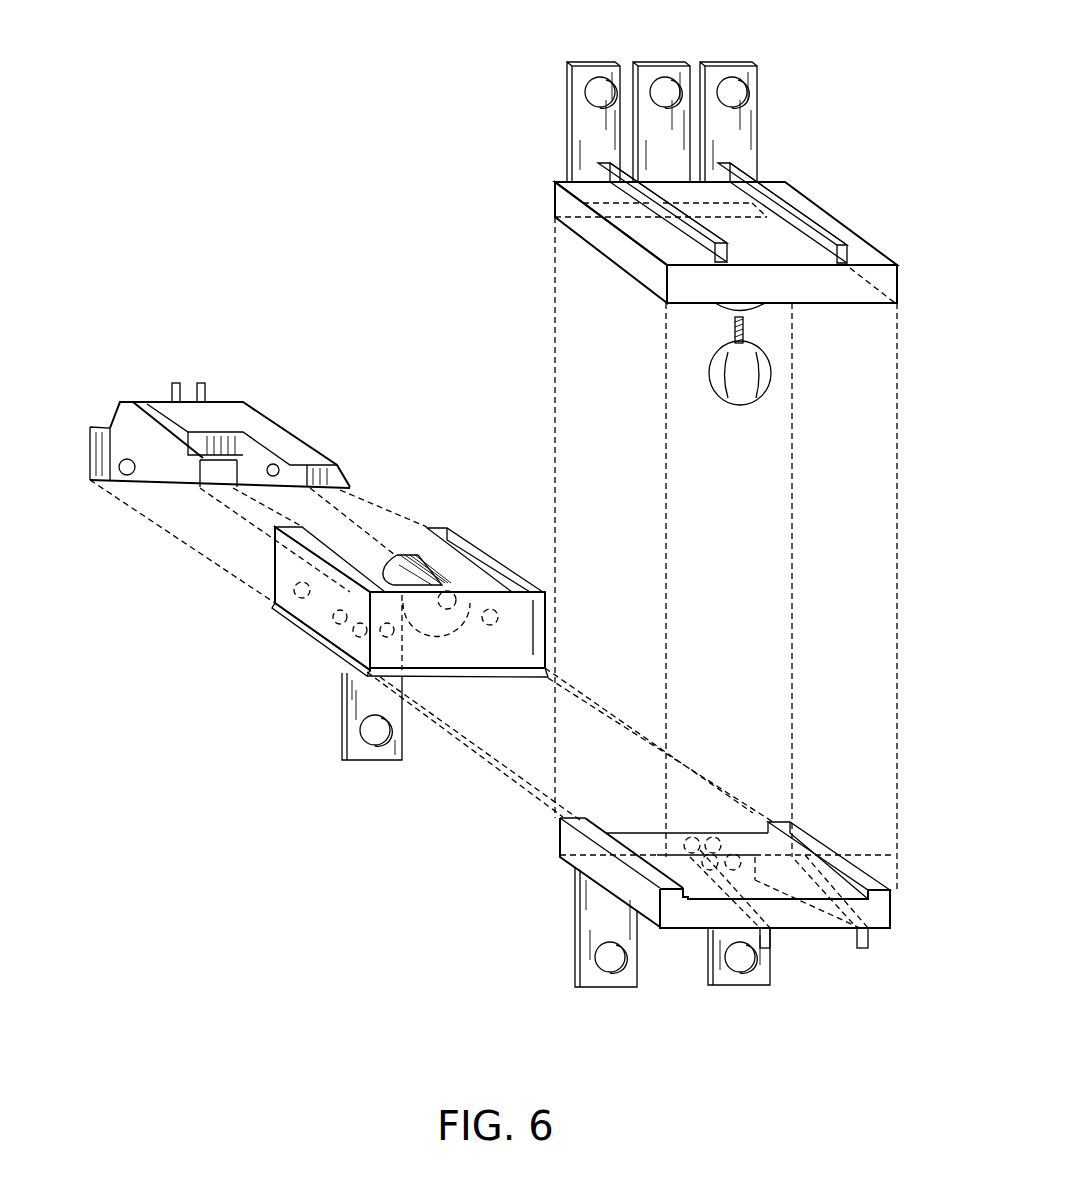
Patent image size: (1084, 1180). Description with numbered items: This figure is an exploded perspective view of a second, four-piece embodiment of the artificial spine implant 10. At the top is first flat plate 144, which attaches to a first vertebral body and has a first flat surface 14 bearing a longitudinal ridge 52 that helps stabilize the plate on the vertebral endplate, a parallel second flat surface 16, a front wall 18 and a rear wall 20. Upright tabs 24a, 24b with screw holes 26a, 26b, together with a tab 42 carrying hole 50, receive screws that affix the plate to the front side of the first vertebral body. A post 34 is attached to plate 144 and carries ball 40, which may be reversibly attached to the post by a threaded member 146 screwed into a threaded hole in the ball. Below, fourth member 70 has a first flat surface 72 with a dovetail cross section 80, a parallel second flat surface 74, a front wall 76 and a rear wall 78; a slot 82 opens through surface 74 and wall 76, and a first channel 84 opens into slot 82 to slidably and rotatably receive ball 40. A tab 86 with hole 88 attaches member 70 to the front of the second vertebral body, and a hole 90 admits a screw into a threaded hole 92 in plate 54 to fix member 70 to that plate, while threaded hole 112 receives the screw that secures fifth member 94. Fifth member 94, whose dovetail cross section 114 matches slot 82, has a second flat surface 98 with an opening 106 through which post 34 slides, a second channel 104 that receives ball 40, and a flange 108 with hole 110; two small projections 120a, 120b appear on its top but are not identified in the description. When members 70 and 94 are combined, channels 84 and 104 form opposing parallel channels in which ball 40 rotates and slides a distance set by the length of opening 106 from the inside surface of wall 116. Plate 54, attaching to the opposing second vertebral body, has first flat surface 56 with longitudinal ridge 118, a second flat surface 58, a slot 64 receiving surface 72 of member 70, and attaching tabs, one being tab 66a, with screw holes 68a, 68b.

The artificial spine implant 10 is at (452, 358).
The first flat surface 14 is at (643, 235).
The second flat surface 16 is at (658, 297).
The front wall 18 is at (555, 185).
The rear wall 20 is at (833, 297).
The tab 24a is at (565, 108).
The tab 24b is at (750, 122).
The screw hole 26a is at (587, 92).
The screw hole 26b is at (722, 82).
The tab 42 is at (652, 70).
The hole 50 is at (664, 92).
The longitudinal ridge 52 is at (770, 200).
The first flat plate 144 is at (818, 206).
The post 34 is at (722, 310).
The threaded member 146 is at (744, 340).
The ball 40 is at (742, 395).
The fourth member 70 is at (473, 540).
The first flat surface 72 is at (492, 680).
The second flat surface 74 is at (498, 570).
The front wall 76 is at (275, 553).
The rear wall 78 is at (543, 607).
The dovetail cross section 80 is at (535, 673).
The slot 82 is at (417, 555).
The first channel 84 is at (393, 572).
The tab 86 is at (340, 705).
The hole 88 is at (370, 735).
The hole 90 is at (355, 640).
The threaded hole 112 is at (312, 607).
The wall 116 is at (420, 610).
The fifth member 94 is at (318, 452).
The second flat surface 98 is at (267, 413).
The second channel 104 is at (247, 478).
The opening 106 is at (227, 432).
The flange 108 is at (90, 458).
The hole 110 is at (130, 474).
The cross section 114 is at (350, 488).
The first pin 120a is at (177, 383).
The second pin 120b is at (201, 383).
The first flat surface 56 is at (697, 927).
The second flat surface 58 is at (815, 847).
The third flat plate 54 is at (862, 864).
The slot 64 is at (745, 830).
The threaded hole 92 is at (680, 840).
The tab 66a is at (587, 920).
The screw hole 68a is at (603, 955).
The screw hole 68b is at (743, 963).
The longitudinal ridge 118 is at (720, 910).